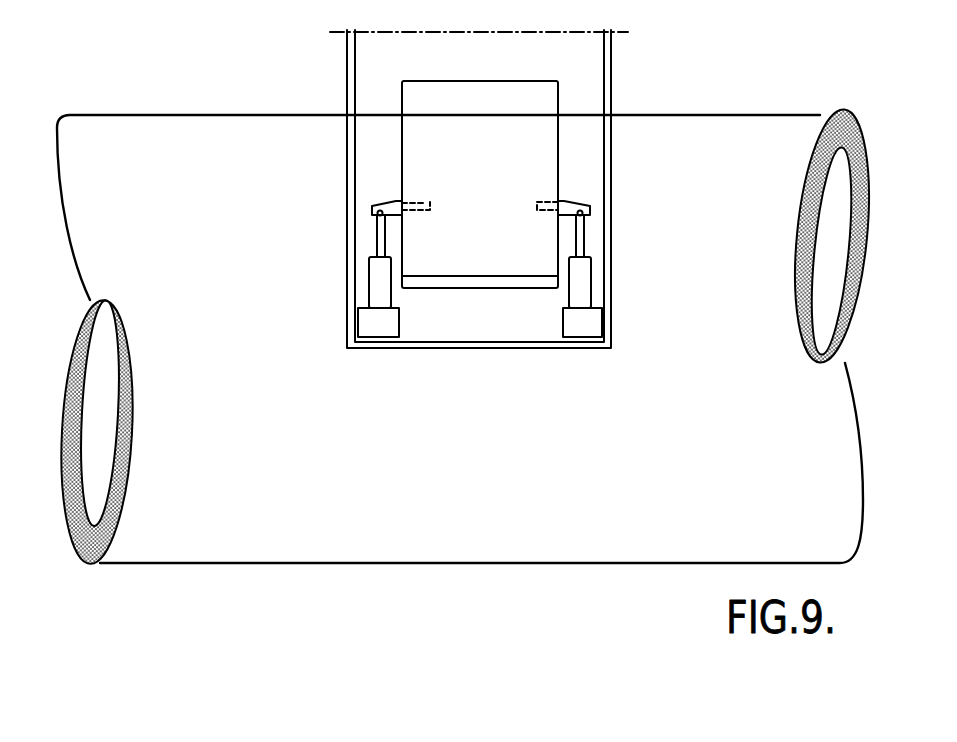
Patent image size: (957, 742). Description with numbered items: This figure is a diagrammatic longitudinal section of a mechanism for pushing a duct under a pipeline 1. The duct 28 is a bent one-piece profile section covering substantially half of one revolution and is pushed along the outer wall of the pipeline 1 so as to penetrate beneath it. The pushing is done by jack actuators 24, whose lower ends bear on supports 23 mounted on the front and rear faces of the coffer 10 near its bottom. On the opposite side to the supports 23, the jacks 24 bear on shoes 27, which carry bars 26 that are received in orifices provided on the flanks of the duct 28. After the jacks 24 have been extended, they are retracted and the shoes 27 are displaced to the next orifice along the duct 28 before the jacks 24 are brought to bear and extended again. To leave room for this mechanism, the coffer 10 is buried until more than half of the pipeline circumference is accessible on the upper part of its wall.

The pipeline 1 is at (177, 135).
The coffer 10 is at (605, 63).
The supports 23 is at (377, 327).
The jack actuator 24 is at (380, 278).
The bars 26 is at (540, 207).
The shoes 27 is at (393, 200).
The duct 28 is at (424, 101).